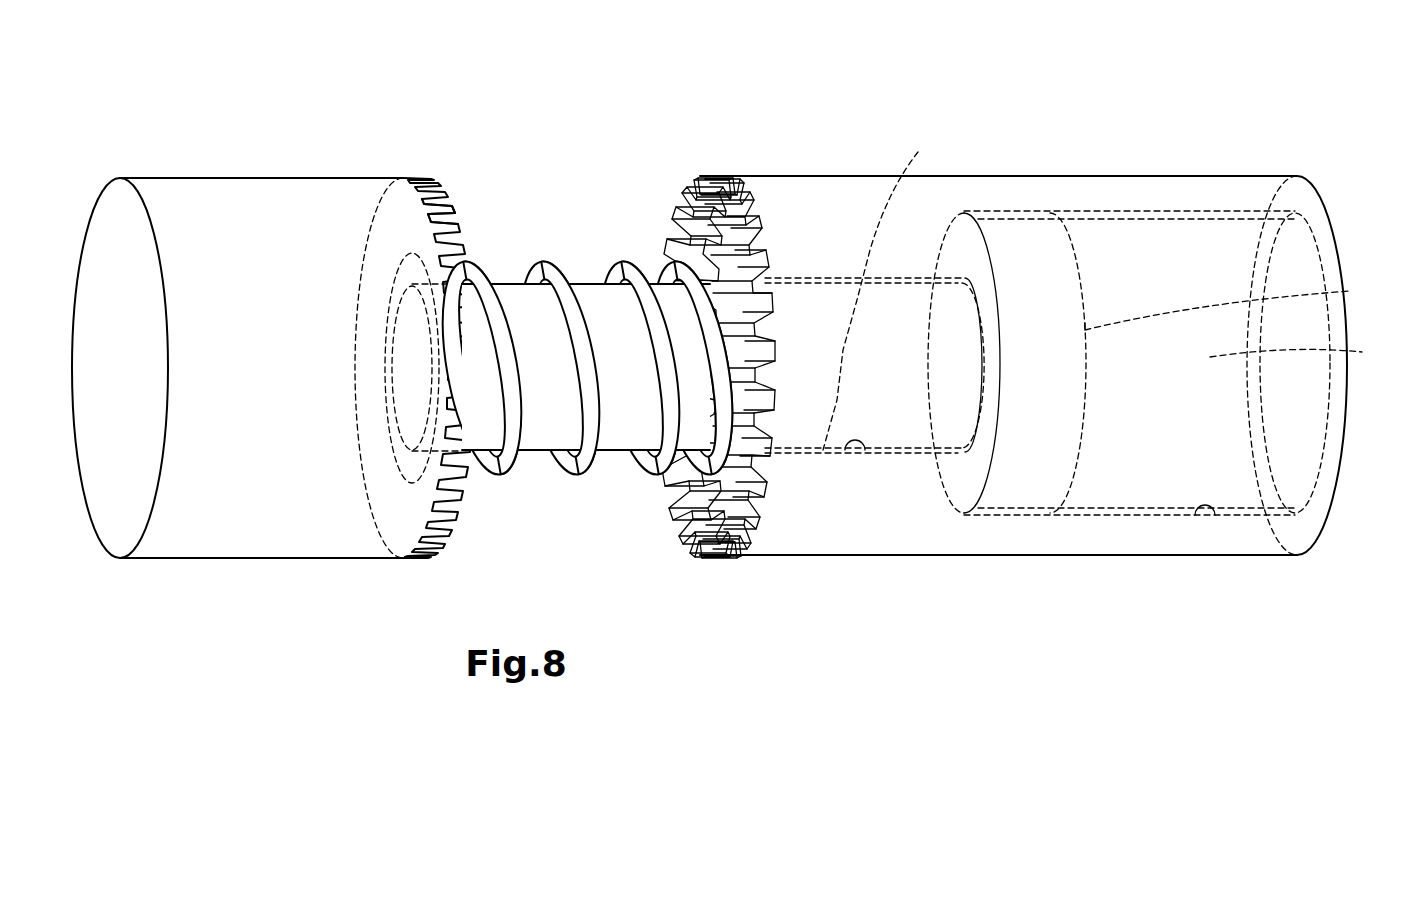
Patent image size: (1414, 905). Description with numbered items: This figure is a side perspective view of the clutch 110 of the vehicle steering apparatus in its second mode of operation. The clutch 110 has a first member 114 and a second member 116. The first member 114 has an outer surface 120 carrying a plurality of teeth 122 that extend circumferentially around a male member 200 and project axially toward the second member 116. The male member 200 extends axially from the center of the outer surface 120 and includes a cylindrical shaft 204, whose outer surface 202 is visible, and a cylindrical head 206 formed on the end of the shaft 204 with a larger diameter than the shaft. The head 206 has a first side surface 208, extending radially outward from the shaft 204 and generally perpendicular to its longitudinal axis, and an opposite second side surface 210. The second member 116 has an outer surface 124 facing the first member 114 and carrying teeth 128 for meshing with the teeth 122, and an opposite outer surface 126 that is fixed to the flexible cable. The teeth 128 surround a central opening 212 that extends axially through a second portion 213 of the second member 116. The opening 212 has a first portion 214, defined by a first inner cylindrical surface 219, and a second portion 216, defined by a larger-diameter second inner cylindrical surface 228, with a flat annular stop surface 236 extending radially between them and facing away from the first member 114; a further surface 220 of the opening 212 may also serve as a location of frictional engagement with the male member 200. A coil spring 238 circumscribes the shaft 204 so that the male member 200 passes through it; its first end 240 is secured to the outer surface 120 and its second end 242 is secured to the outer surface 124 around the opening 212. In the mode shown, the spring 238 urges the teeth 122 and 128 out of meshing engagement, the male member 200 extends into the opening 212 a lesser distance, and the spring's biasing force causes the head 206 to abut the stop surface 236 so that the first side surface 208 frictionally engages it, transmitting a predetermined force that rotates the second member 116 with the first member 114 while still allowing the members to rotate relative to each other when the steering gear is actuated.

The clutch 110 is at (968, 78).
The first member 114 is at (240, 210).
The second member 116 is at (830, 185).
The outer surface 120 is at (423, 190).
The teeth 122 is at (450, 217).
The outer surface 124 is at (700, 185).
The outer surface 126 is at (1340, 265).
The teeth 128 is at (700, 557).
The male member 200 is at (1068, 502).
The outer surface 202 is at (897, 450).
The cylindrical shaft 204 is at (545, 423).
The cylindrical head 206 is at (1030, 217).
The first side surface 208 is at (970, 480).
The second side surface 210 is at (1247, 305).
The central opening 212 is at (1212, 236).
The second portion 213 is at (920, 557).
The first portion 214 is at (894, 291).
The second portion 216 is at (1310, 352).
The first inner cylindrical surface 219 is at (845, 444).
The surface 220 is at (990, 220).
The second inner cylindrical surface 228 is at (1217, 515).
The annular stop surface 236 is at (973, 218).
The coil spring 238 is at (540, 283).
The first end 240 is at (467, 270).
The second end 242 is at (667, 473).